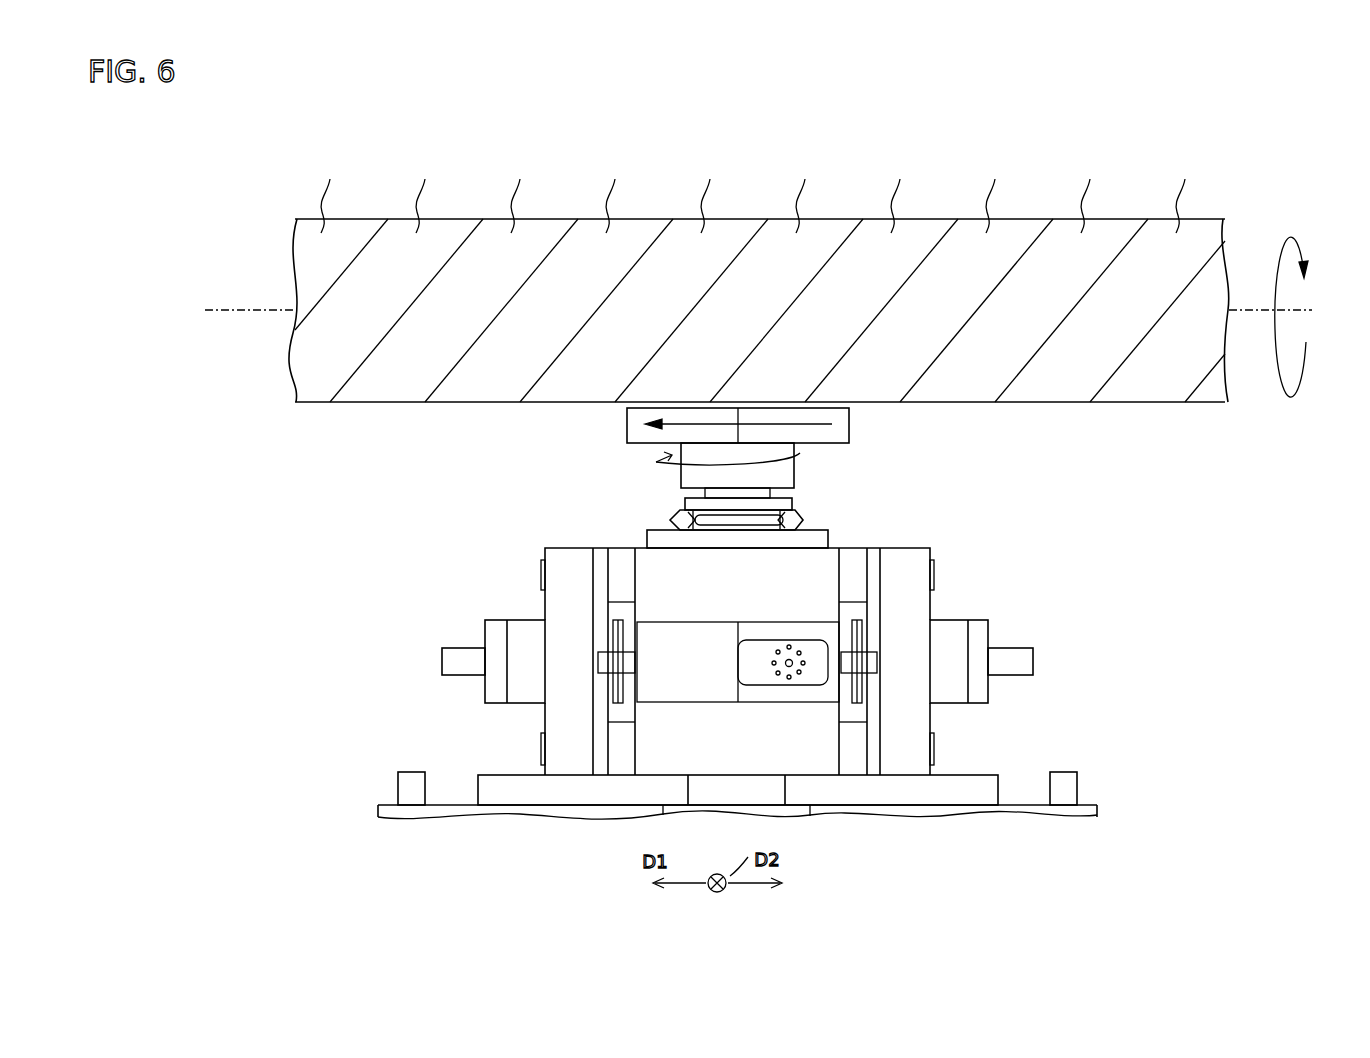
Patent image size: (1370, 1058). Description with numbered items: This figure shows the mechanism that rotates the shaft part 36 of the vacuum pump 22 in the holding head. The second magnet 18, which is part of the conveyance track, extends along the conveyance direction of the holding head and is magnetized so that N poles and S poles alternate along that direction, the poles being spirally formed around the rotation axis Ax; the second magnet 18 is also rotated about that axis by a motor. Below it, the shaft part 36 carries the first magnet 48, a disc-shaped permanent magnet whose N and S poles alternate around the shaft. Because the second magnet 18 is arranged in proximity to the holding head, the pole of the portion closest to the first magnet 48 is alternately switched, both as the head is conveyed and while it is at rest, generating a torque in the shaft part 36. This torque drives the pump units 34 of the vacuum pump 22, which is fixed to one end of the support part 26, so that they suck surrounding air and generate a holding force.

The second magnet 18 is at (1227, 216).
The first magnet 48 is at (849, 455).
The shaft part 36 is at (797, 497).
The pump unit 34 is at (643, 549).
The vacuum pump 22 is at (963, 502).
The support part 26 is at (985, 772).